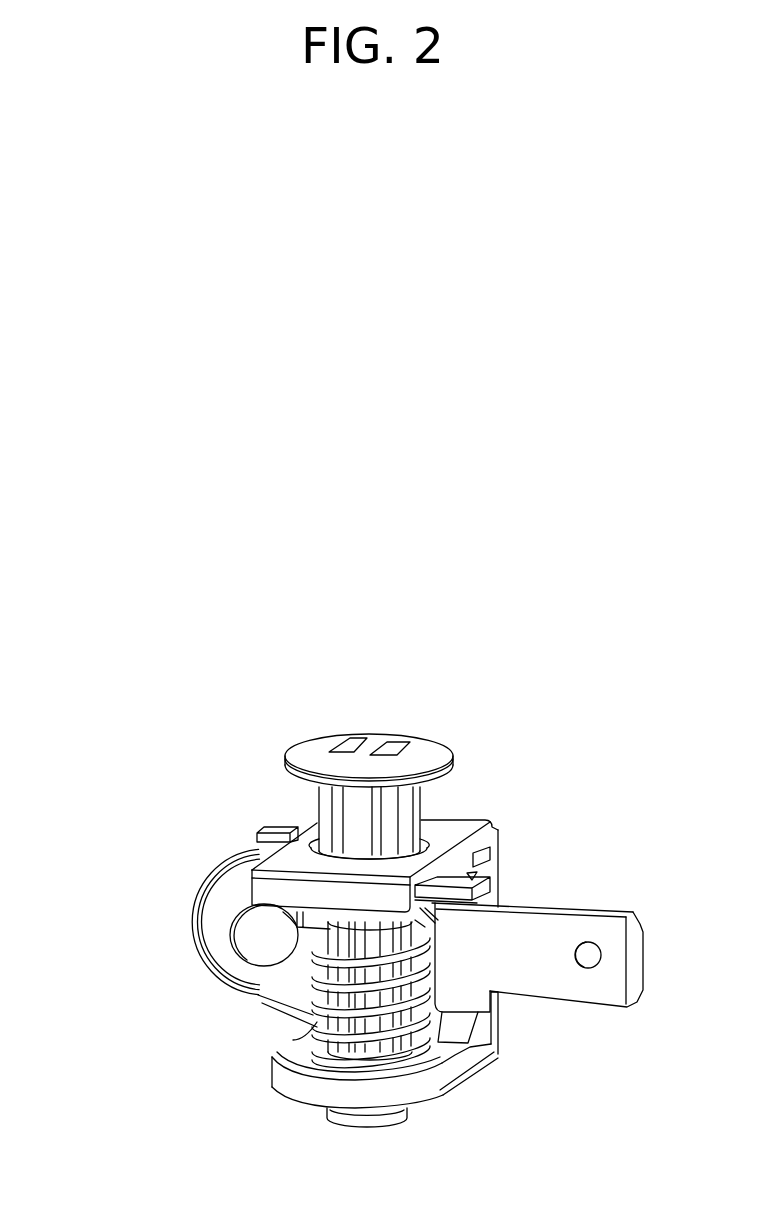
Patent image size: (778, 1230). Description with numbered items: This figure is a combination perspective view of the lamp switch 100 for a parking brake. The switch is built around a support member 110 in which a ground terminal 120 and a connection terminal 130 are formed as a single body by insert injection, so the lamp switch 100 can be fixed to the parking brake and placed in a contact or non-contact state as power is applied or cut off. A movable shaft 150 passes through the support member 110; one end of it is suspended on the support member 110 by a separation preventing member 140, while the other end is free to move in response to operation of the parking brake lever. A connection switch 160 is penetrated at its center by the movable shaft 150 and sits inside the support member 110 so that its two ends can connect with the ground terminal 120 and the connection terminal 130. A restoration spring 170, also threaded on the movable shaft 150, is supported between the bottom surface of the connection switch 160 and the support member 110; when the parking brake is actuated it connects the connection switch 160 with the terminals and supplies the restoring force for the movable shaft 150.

The lamp switch for a parking brake 100 is at (412, 642).
The support member 110 is at (469, 808).
The ground terminal 120 is at (192, 897).
The connection terminal 130 is at (555, 893).
The separation preventing member 140 is at (373, 1123).
The movable shaft 150 is at (308, 837).
The connection switch 160 is at (428, 920).
The restoration spring 170 is at (300, 1031).